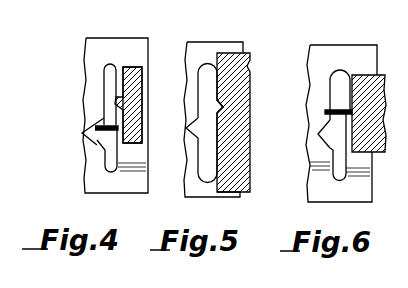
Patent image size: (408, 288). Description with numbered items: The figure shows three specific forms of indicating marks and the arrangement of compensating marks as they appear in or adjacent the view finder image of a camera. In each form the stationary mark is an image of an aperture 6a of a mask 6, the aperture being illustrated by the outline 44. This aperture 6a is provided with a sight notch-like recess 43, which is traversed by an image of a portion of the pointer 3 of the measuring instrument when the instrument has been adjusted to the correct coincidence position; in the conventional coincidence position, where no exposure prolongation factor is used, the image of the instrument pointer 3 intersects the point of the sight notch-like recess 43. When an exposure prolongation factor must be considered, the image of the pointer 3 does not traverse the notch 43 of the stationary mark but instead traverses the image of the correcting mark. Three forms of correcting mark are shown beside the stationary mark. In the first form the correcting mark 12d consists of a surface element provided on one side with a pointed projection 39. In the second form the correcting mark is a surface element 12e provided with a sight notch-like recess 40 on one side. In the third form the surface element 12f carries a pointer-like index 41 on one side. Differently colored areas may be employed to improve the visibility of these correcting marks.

In FIG. 4, the pointer 3 is at (100, 153).
In FIG. 4, the mask 6 is at (93, 178).
In FIG. 5, the mask 6 is at (185, 193).
In FIG. 6, the mask 6 is at (316, 195).
In FIG. 4, the aperture 6a is at (108, 78).
In FIG. 5, the aperture 6a is at (204, 72).
In FIG. 6, the aperture 6a is at (330, 80).
In FIG. 4, the correcting mark 12d is at (128, 66).
In FIG. 5, the surface element 12e is at (249, 66).
In FIG. 6, the surface element 12f is at (363, 74).
In FIG. 4, the pointed projection 39 is at (106, 98).
In FIG. 5, the sight notch-like recess 40 is at (221, 107).
In FIG. 6, the pointer-like index 41 is at (325, 112).
In FIG. 4, the sight notch-like recess 43 is at (98, 126).
In FIG. 4, the outline 44 is at (100, 70).